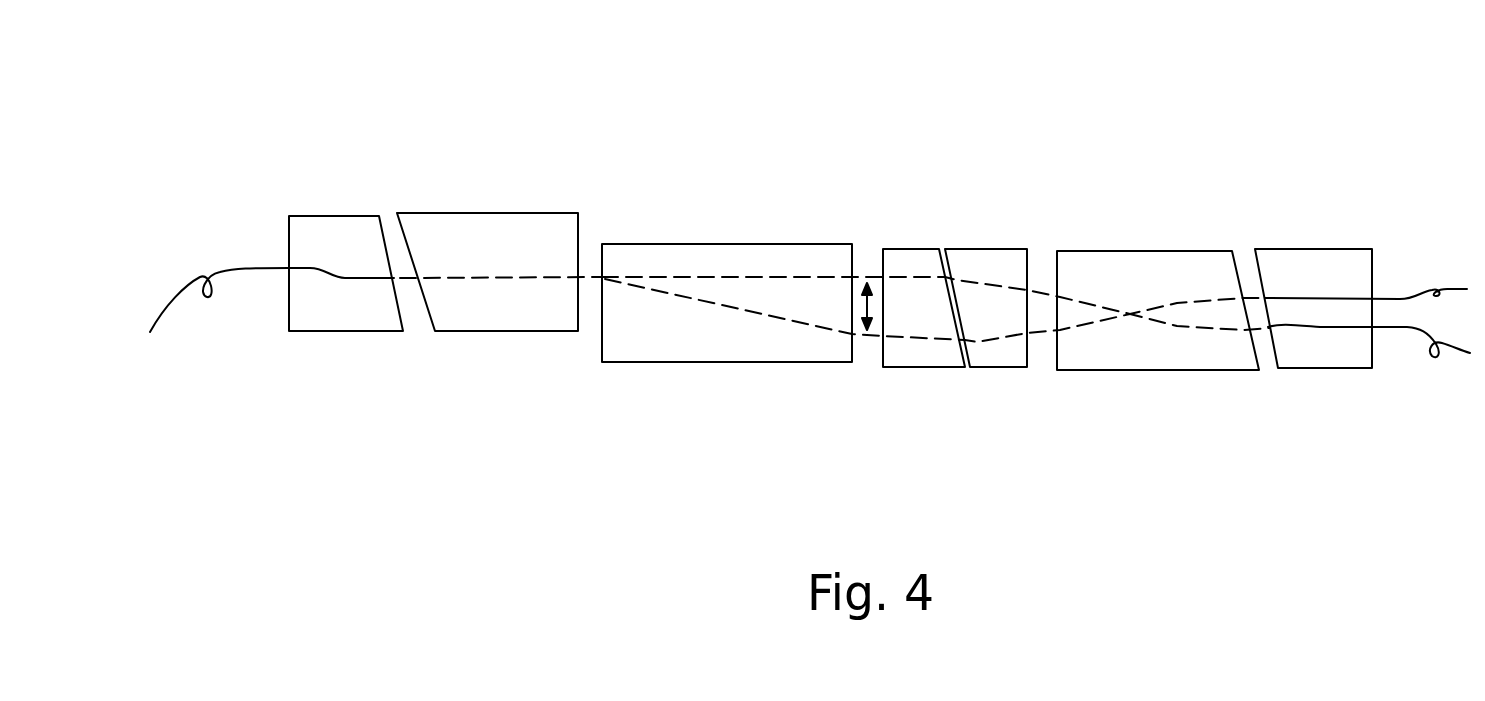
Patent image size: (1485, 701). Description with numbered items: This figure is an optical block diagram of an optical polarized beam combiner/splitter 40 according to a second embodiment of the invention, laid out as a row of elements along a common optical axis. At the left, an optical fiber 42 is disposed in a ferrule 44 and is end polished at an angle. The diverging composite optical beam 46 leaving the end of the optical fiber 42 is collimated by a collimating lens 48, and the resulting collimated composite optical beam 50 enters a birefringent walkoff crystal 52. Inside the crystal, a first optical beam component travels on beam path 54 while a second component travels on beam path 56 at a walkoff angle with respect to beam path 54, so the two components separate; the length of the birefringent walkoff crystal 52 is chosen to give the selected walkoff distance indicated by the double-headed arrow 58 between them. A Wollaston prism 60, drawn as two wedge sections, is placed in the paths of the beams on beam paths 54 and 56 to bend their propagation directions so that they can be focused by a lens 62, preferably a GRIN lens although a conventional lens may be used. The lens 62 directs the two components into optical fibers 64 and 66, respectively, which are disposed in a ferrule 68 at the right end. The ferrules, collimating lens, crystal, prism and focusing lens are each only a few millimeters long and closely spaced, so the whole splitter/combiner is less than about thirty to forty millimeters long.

The optical polarized beam combiner/splitter 40 is at (851, 103).
The optical fiber 42 is at (240, 270).
The ferrule 44 is at (331, 333).
The diverging composite optical beam 46 is at (403, 279).
The collimating lens 48 is at (457, 213).
The collimated composite optical beam 50 is at (588, 272).
The birefringent walkoff crystal 52 is at (782, 244).
The beam path 54 is at (690, 277).
The beam path 56 is at (753, 320).
The double-headed arrow 58 is at (877, 337).
The Wollaston prism 60 is at (982, 249).
The lens 62 is at (1133, 251).
The optical fiber 64 is at (1407, 299).
The optical fiber 66 is at (1410, 328).
The ferrule 68 is at (1323, 250).